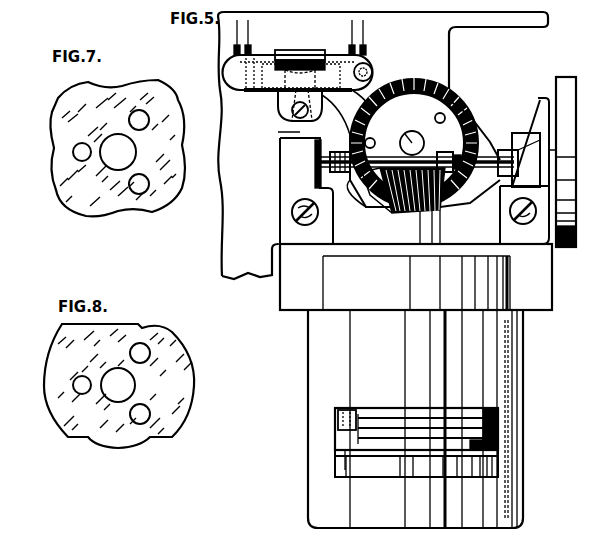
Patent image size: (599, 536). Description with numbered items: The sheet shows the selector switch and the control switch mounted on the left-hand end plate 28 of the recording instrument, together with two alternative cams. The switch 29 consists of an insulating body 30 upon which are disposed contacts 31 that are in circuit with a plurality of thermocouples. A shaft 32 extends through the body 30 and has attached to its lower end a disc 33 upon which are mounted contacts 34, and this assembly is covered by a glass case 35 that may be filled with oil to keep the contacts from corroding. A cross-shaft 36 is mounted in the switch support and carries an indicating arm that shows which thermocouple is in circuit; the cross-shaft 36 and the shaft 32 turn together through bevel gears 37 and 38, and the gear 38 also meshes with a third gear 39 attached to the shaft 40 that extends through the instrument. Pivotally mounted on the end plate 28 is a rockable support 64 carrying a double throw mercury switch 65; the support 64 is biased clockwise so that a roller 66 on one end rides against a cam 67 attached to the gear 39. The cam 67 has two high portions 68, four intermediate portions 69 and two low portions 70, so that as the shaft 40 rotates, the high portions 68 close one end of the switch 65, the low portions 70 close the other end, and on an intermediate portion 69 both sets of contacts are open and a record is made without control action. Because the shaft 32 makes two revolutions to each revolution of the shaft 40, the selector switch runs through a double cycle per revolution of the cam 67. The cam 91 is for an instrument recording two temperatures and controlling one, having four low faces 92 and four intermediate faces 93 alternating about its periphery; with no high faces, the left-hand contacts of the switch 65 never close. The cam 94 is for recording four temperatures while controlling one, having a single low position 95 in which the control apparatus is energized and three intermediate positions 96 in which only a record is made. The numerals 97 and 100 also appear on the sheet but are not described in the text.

In FIG. 5, the left-hand end plate 28 is at (452, 50).
In FIG. 5, the selector switch 29 is at (546, 292).
In FIG. 5, the insulating body 30 is at (352, 350).
In FIG. 5, the contacts 31 is at (444, 408).
In FIG. 5, the shaft 32 is at (436, 214).
In FIG. 5, the disc 33 is at (340, 474).
In FIG. 5, the contacts 34 is at (338, 416).
In FIG. 5, the glass case 35 is at (316, 454).
In FIG. 5, the cross-shaft 36 is at (490, 168).
In FIG. 5, the bevel gear 37 is at (444, 152).
In FIG. 5, the bevel gear 38 is at (392, 212).
In FIG. 5, the third gear 39 is at (462, 104).
In FIG. 5, the shaft 40 is at (410, 136).
In FIG. 5, the rockable support 64 is at (278, 110).
In FIG. 5, the double throw mercury switch 65 is at (284, 64).
In FIG. 5, the roller 66 is at (366, 62).
In FIG. 5, the cam 67 is at (486, 146).
In FIG. 5, the high portions 68 is at (278, 132).
In FIG. 5, the intermediate portions 69 is at (350, 142).
In FIG. 5, the low portions 70 is at (372, 92).
In FIG. 7, the cam 91 is at (58, 136).
In FIG. 7, the low faces 92 is at (134, 78).
In FIG. 7, the intermediate faces 93 is at (170, 96).
In FIG. 8, the cam 94 is at (60, 354).
In FIG. 8, the low position 95 is at (138, 323).
In FIG. 8, the intermediate positions 96 is at (174, 332).
In FIG. 5, the rack 97 is at (574, 162).
In FIG. 5, the housing 100 is at (589, 357).